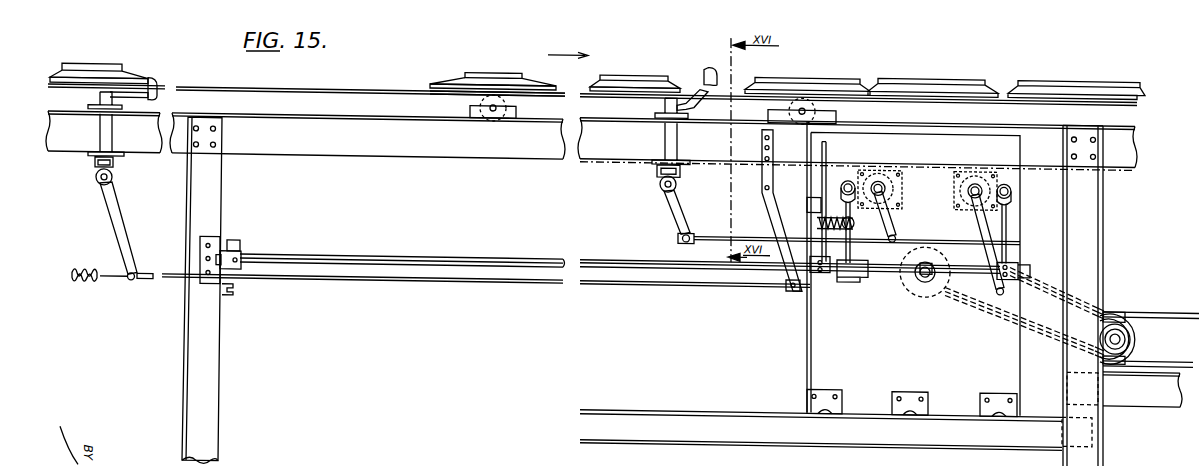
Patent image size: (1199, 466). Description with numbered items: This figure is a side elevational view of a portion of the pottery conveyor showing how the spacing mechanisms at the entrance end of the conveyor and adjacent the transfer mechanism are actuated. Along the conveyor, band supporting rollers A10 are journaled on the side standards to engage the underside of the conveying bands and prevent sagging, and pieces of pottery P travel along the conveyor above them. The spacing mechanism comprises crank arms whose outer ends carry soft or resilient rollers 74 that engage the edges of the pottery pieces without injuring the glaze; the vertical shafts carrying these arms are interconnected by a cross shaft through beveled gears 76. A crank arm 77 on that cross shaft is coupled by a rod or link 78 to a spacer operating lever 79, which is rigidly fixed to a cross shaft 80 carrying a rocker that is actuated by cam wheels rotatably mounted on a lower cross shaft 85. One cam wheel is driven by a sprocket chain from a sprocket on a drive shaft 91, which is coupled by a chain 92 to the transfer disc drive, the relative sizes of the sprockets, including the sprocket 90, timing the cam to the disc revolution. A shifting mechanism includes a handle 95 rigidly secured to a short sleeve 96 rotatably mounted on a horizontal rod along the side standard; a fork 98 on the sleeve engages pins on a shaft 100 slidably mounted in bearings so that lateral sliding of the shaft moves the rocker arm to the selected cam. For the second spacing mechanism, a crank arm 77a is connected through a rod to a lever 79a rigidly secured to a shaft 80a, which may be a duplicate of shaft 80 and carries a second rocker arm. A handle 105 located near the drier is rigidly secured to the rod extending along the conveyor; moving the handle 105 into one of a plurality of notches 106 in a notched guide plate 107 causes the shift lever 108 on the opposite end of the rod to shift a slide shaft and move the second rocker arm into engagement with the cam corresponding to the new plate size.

The rollers 74 is at (712, 74).
The beveled gears 76 is at (660, 196).
The crank arm 77 is at (682, 210).
The crank arm 77a is at (112, 212).
The rod or link 78 is at (705, 238).
The spacer operating lever 79 is at (897, 224).
The lever 79a is at (982, 216).
The cross shaft 80 is at (884, 188).
The shaft 80a is at (967, 191).
The cross shaft 85 is at (918, 290).
The sprocket 90 is at (1114, 305).
The drive shaft 91 is at (1138, 337).
The chain 92 is at (1157, 307).
The handle 95 is at (827, 154).
The short sleeve 96 is at (829, 290).
The fork 98 is at (841, 188).
The shaft 100 is at (854, 212).
The handle 105 is at (243, 252).
The notches 106 is at (226, 240).
The notched guide plate 107 is at (233, 293).
The shift lever 108 is at (1013, 201).
The band supporting rollers A10 is at (495, 96).
The pan P is at (951, 86).